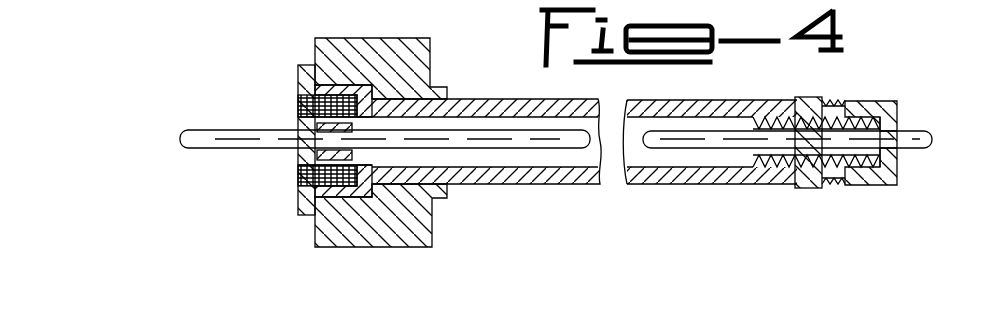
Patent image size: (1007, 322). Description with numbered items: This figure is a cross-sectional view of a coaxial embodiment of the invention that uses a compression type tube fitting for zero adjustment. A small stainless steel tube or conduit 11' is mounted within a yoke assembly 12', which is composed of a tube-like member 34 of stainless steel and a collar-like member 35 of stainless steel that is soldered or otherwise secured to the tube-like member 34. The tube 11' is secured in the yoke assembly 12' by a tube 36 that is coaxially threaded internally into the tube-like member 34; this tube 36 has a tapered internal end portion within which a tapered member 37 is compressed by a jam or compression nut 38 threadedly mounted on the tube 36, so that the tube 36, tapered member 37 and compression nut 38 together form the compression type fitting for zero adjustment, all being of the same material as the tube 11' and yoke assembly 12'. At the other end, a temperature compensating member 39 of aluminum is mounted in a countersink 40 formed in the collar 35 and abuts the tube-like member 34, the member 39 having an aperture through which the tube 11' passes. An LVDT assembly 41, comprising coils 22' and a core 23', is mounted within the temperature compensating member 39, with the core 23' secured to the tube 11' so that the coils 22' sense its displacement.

The tube 11' is at (541, 160).
The yoke assembly 12' is at (486, 171).
The coils 22' is at (292, 188).
The core 23' is at (299, 149).
The tube-like member 34 is at (667, 110).
The collar-like member 35 is at (408, 67).
The tube 36 is at (776, 168).
The tapered member 37 is at (855, 180).
The compression nut 38 is at (887, 107).
The temperature compensating member 39 is at (343, 87).
The countersink 40 is at (348, 190).
The LVDT assembly 41 is at (297, 109).